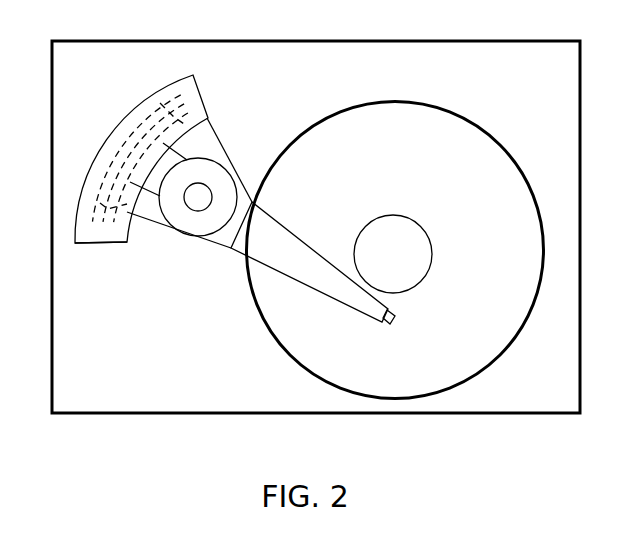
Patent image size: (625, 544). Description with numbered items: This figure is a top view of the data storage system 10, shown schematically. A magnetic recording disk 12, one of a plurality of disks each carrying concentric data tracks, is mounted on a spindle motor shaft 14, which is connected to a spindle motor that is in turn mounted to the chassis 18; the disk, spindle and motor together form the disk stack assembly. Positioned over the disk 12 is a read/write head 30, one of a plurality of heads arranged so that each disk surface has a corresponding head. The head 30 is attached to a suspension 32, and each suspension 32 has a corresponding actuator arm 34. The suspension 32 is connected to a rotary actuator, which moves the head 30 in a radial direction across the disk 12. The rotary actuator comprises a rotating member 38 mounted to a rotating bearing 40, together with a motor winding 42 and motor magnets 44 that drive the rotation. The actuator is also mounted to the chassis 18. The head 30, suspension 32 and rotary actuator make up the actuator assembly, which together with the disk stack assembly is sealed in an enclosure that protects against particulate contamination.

The data storage system 10 is at (87, 430).
The magnetic recording disk 12 is at (366, 161).
The spindle motor shaft 14 is at (410, 253).
The chassis 18 is at (535, 93).
The read/write head 30 is at (393, 324).
The suspension 32 is at (307, 263).
The actuator arm 34 is at (250, 202).
The rotating member 38 is at (197, 221).
The rotating bearing 40 is at (190, 198).
The motor winding 42 is at (102, 202).
The motor magnets 44 is at (183, 97).